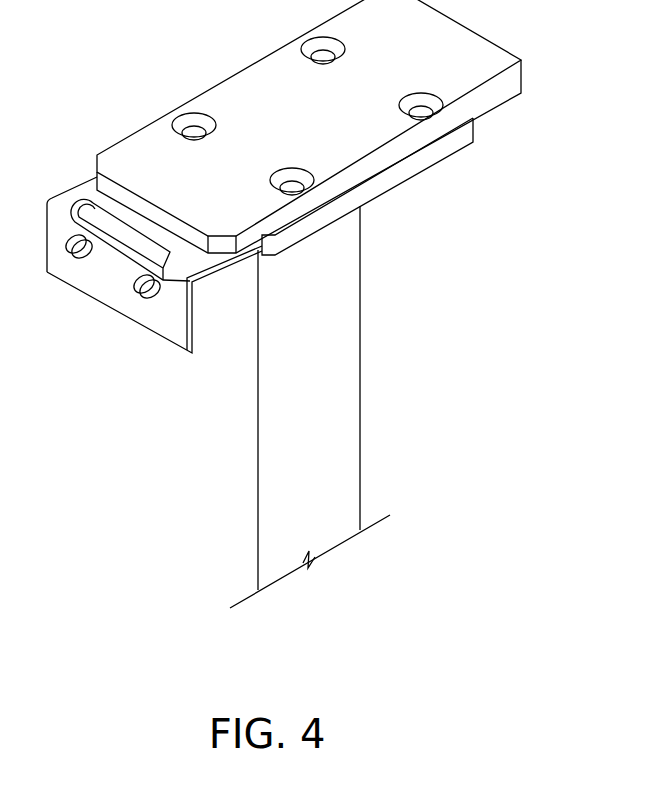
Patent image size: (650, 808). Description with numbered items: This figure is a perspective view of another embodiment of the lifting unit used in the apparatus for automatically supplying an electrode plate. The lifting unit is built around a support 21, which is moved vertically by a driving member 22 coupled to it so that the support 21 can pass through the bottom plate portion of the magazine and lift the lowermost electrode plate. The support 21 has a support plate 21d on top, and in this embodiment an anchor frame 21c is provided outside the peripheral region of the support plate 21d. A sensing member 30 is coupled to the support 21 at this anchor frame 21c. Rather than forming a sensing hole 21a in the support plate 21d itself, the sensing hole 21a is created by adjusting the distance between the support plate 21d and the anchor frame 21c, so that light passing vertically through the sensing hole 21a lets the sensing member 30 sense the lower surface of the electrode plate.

The support 21 is at (142, 66).
The sensing hole 21a is at (100, 214).
The anchor frame 21c is at (158, 315).
The support plate 21d is at (139, 163).
The sensing member 30 is at (133, 240).
The driving member 22 is at (340, 357).